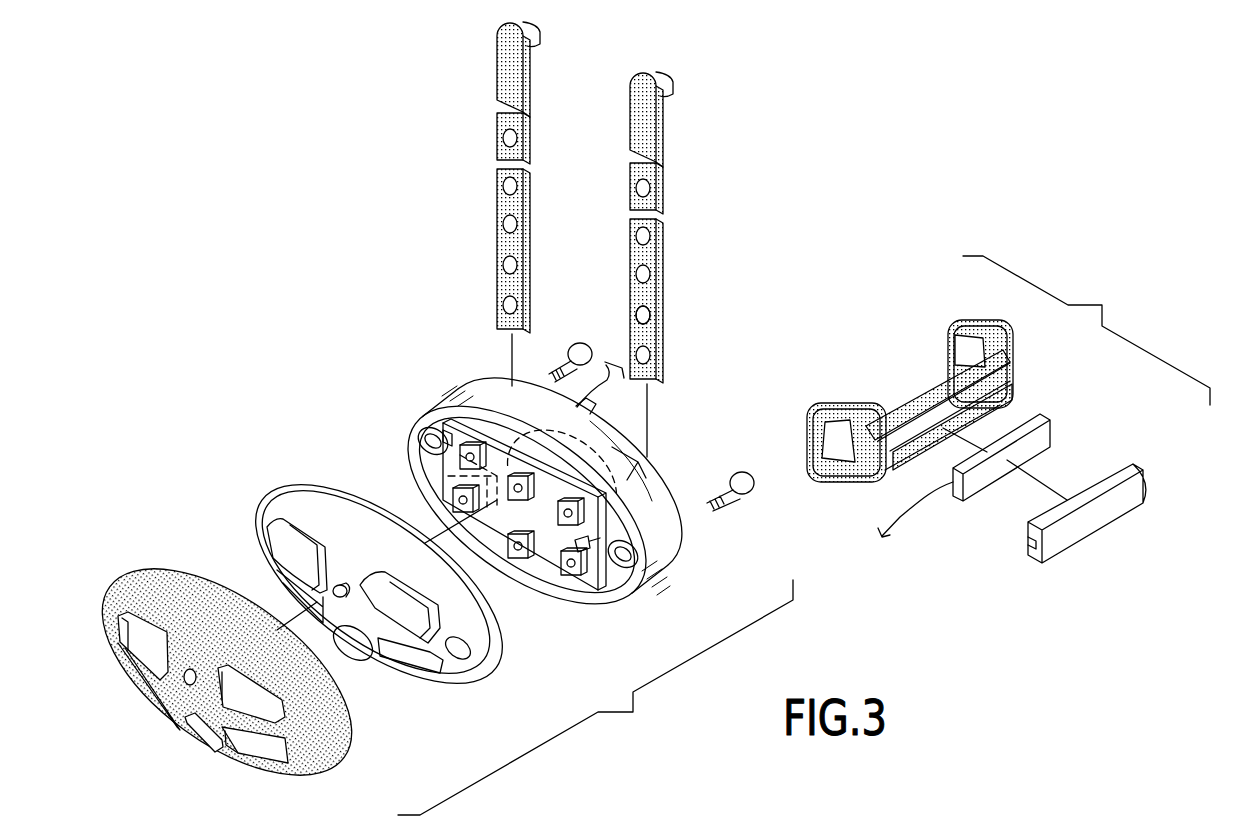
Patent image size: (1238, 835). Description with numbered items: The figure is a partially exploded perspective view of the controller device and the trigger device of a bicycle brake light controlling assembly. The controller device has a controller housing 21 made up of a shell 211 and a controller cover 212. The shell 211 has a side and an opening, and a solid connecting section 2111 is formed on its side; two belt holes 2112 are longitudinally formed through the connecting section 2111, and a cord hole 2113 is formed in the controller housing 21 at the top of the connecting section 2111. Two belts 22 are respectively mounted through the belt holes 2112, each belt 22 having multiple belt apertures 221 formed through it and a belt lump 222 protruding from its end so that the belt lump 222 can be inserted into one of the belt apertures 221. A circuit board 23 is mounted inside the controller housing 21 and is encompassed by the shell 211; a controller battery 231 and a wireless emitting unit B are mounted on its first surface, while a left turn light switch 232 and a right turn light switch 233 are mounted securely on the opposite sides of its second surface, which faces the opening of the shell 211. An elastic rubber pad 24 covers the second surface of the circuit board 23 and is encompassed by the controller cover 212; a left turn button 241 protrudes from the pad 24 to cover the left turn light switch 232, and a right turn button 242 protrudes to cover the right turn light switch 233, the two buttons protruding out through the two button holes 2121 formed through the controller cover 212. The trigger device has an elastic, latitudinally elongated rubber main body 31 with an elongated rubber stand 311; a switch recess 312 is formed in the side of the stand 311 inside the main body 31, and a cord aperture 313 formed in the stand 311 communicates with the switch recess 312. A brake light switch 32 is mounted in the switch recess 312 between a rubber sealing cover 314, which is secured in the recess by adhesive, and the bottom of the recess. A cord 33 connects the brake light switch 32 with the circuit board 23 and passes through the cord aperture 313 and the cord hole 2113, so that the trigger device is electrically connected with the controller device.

The controller housing 21 is at (226, 672).
The shell 211 is at (464, 376).
The connecting section 2111 is at (677, 545).
The belt holes 2112 is at (650, 464).
The cord hole 2113 is at (590, 410).
The controller cover 212 is at (340, 737).
The button holes 2121 is at (120, 631).
The belts 22 is at (656, 258).
The belt apertures 221 is at (648, 316).
The belt lump 222 is at (663, 86).
The circuit board 23 is at (545, 570).
The controller battery 231 is at (607, 517).
The left turn light switch 232 is at (455, 455).
The right turn light switch 233 is at (597, 560).
The pad 24 is at (282, 500).
The left turn button 241 is at (285, 548).
The right turn button 242 is at (397, 623).
The main body 31 is at (1005, 458).
The stand 311 is at (945, 387).
The switch recess 312 is at (998, 390).
The cord aperture 313 is at (881, 467).
The sealing cover 314 is at (1120, 510).
The brake light switch 32 is at (1047, 435).
The cord 33 is at (612, 362).
The wireless emitting unit B is at (440, 481).